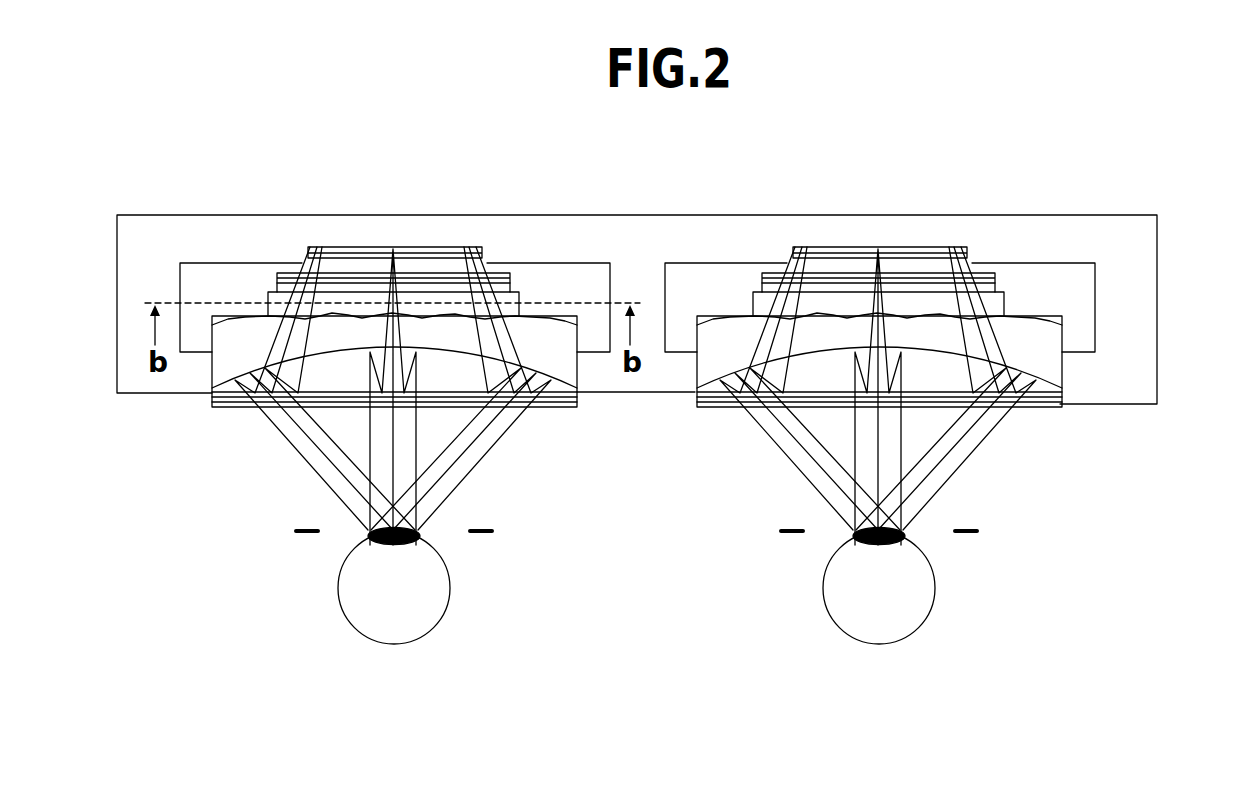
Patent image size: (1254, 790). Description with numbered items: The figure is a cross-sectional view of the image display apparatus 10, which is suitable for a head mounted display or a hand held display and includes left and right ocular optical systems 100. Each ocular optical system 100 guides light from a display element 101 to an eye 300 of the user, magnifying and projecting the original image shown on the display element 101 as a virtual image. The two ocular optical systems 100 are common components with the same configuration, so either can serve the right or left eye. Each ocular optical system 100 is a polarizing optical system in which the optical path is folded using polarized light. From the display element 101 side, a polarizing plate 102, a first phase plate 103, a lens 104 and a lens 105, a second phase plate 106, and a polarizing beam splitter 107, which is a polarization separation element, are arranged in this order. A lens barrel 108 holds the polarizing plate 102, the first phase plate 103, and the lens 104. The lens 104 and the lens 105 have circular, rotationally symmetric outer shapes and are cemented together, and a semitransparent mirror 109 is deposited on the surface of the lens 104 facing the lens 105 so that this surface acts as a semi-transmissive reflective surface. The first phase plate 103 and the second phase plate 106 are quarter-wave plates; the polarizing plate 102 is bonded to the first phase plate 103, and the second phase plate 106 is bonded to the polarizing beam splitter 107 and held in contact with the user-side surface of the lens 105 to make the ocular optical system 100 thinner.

The image display apparatus 10 is at (1063, 213).
The ocular optical system 100 is at (258, 415).
The display element 101 is at (414, 262).
The polarizing plate 102 is at (352, 272).
The first phase plate 103 is at (448, 272).
The lens 104 is at (223, 358).
The lens 105 is at (237, 394).
The second phase plate 106 is at (563, 409).
The polarizing beam splitter 107 is at (540, 408).
The lens barrel 108 is at (558, 262).
The semitransparent mirror 109 is at (335, 357).
The eye 300 is at (387, 644).